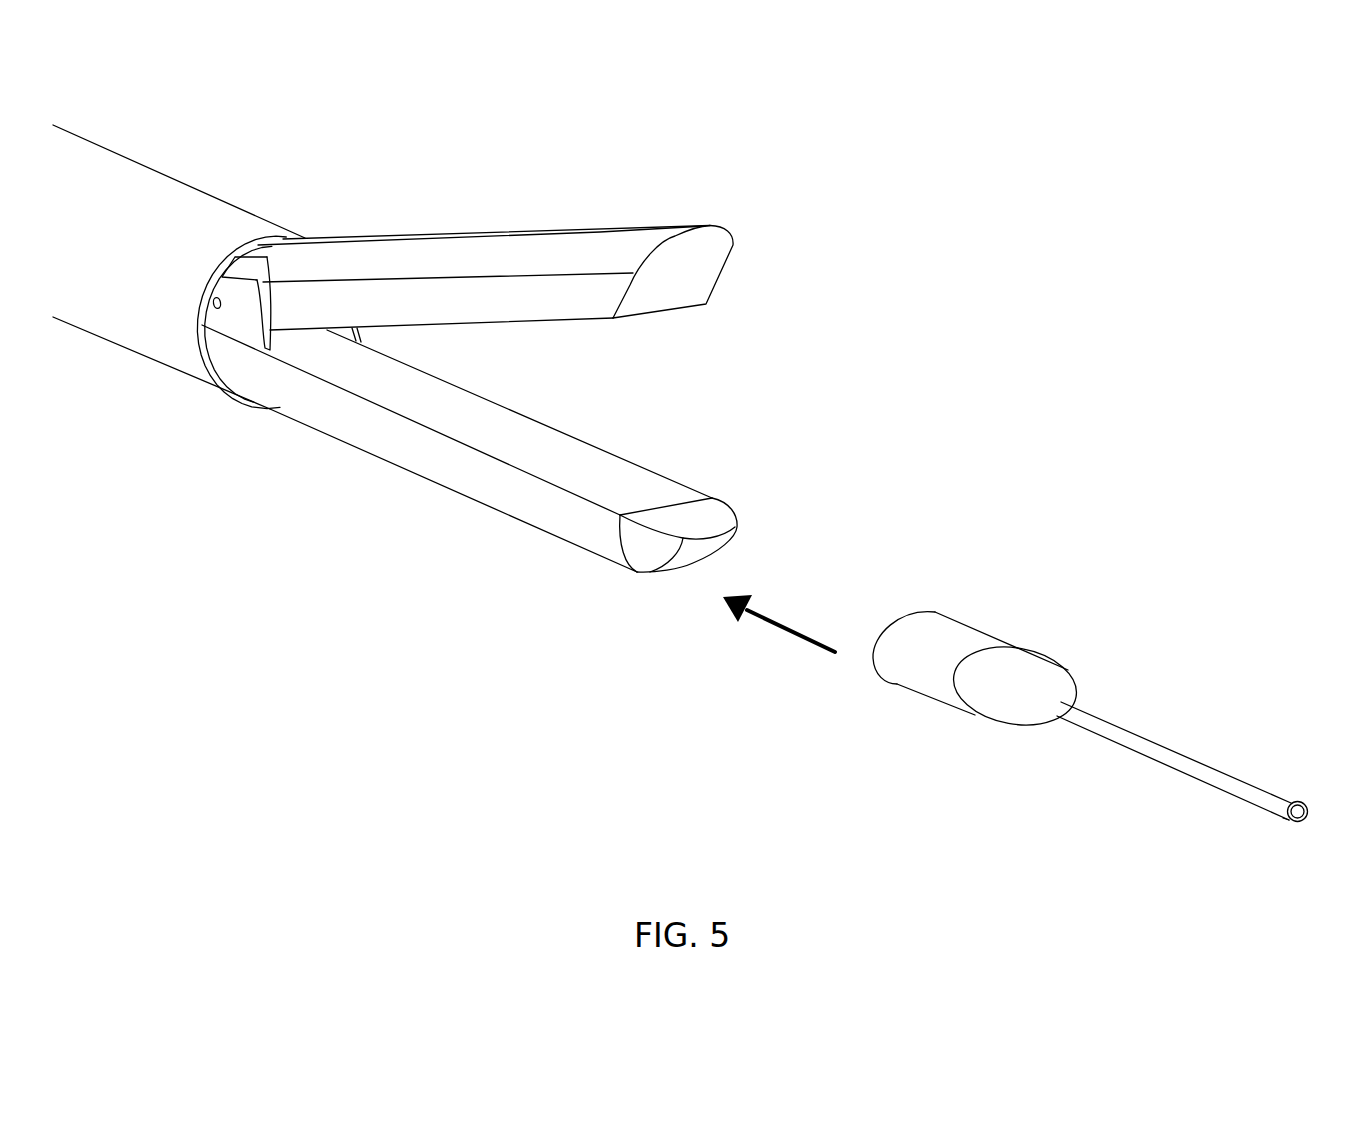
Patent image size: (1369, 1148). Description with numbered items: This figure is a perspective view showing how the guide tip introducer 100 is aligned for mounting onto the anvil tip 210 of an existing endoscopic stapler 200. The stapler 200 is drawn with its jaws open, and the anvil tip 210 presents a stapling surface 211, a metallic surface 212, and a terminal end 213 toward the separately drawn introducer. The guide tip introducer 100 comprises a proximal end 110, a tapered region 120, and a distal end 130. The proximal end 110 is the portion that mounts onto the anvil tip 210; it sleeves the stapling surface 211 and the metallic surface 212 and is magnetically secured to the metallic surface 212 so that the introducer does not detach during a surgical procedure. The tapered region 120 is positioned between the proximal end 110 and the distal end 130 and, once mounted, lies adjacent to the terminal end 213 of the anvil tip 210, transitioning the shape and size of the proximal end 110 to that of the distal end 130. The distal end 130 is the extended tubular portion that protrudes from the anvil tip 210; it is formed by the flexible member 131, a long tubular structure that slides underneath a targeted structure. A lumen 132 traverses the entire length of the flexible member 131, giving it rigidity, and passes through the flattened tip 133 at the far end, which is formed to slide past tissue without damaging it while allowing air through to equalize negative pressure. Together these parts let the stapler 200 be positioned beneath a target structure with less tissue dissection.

The guide tip introducer 100 is at (1102, 603).
The proximal end 110 is at (997, 627).
The tapered region 120 is at (1067, 668).
The distal end 130 is at (1194, 785).
The flexible member 131 is at (1154, 760).
The lumen 132 is at (1287, 820).
The flattened tip 133 is at (1300, 802).
The endoscopic stapler 200 is at (478, 334).
The anvil tip 210 is at (552, 414).
The stapling surface 211 is at (547, 448).
The metallic surface 212 is at (530, 523).
The terminal end 213 is at (738, 528).